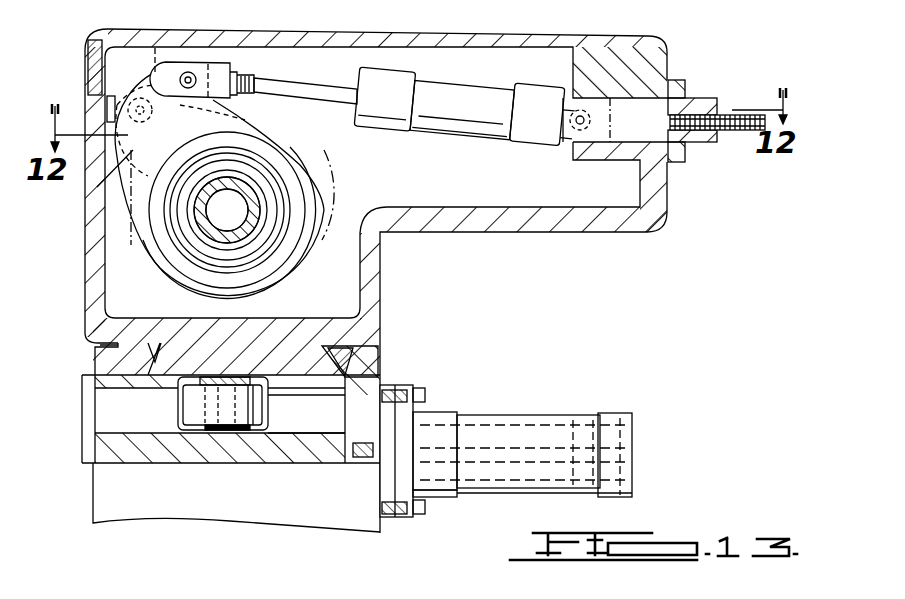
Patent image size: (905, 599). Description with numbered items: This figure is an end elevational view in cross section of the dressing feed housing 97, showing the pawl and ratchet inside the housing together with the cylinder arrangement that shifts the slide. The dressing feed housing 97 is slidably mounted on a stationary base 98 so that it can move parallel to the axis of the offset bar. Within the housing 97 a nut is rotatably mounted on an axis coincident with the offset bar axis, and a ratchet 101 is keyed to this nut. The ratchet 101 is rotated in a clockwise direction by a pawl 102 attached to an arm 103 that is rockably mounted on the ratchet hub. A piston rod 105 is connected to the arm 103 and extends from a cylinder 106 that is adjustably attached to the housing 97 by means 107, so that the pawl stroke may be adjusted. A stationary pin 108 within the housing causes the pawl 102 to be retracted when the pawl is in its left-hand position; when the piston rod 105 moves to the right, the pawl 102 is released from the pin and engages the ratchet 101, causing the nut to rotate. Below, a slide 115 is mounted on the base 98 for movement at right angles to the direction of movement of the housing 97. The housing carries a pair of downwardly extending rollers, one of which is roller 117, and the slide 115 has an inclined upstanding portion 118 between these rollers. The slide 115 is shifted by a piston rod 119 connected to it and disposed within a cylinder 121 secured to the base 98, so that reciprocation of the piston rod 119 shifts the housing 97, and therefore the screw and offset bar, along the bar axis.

The dressing feed housing 97 is at (368, 323).
The stationary base 98 is at (113, 345).
The ratchet 101 is at (283, 131).
The pawl 102 is at (155, 47).
The arm 103 is at (86, 188).
The piston rod 105 is at (284, 88).
The cylinder 106 is at (473, 91).
The adjusting means 107 is at (705, 96).
The stationary pin 108 is at (86, 204).
The slide 115 is at (117, 456).
The roller 117 is at (193, 405).
The inclined upstanding portion 118 is at (382, 362).
The piston rod 119 is at (481, 443).
The cylinder 121 is at (518, 492).